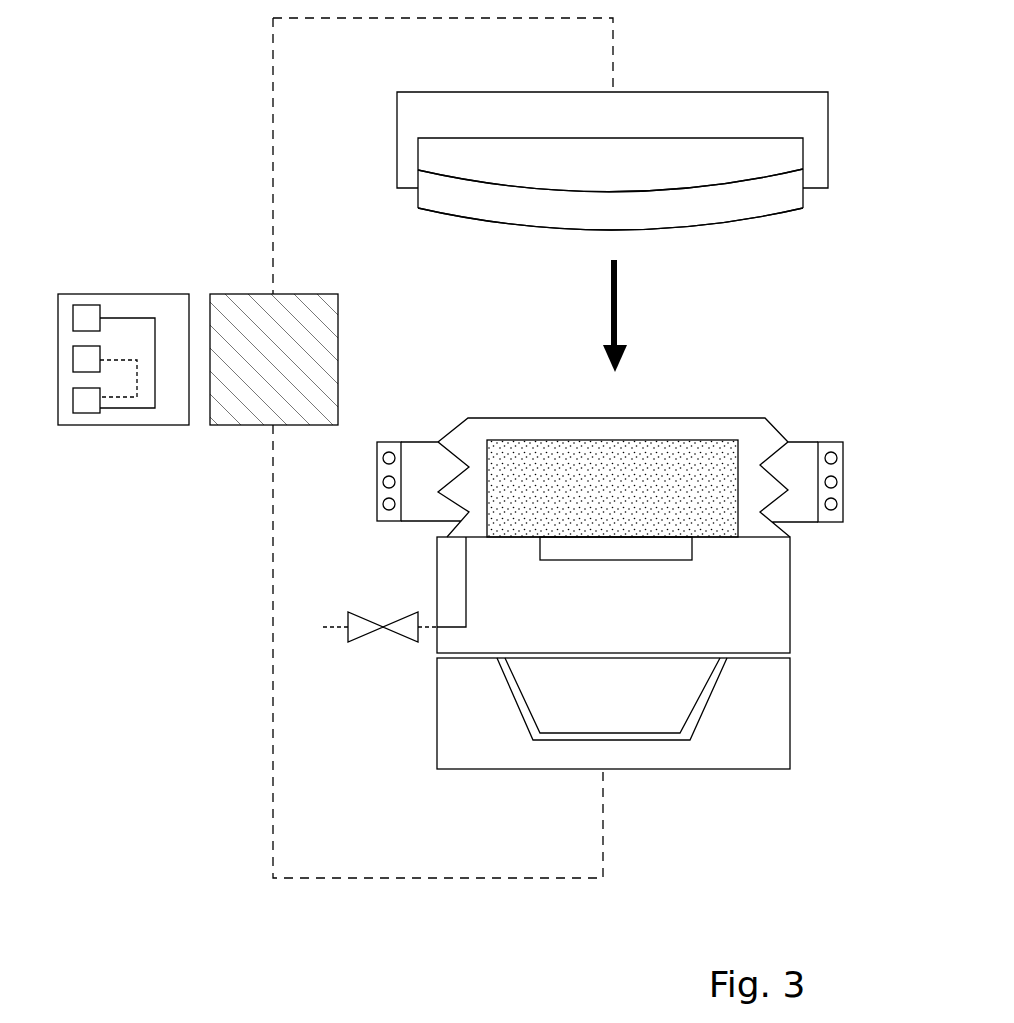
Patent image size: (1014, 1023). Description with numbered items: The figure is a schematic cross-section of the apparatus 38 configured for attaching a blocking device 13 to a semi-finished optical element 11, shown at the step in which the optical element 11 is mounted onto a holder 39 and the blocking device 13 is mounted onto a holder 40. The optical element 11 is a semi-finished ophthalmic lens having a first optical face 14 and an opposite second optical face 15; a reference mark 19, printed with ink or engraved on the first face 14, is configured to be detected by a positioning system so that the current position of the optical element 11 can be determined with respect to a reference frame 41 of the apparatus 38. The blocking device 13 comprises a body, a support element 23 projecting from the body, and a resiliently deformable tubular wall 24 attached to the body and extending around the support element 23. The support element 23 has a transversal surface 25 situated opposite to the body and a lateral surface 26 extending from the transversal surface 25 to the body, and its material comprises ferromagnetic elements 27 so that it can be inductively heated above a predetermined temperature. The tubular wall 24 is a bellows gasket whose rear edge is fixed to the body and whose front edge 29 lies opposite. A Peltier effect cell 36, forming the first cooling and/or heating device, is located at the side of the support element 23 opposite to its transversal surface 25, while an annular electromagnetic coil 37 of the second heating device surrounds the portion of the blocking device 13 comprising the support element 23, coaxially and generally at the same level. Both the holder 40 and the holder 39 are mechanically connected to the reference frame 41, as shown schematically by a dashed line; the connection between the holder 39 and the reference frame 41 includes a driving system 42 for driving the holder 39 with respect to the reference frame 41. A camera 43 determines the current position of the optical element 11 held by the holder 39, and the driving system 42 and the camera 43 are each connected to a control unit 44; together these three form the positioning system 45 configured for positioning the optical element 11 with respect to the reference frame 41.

The semi-finished optical element 11 is at (783, 212).
The blocking device 13 is at (790, 612).
The first optical face 14 is at (462, 227).
The second optical face 15 is at (507, 172).
The reference mark 19 is at (613, 222).
The support element 23 is at (738, 505).
The resiliently deformable tubular wall 24 is at (452, 462).
The transversal surface 25 is at (536, 432).
The lateral surface 26 is at (472, 490).
The ferromagnetic elements 27 is at (725, 490).
The front edge 29 is at (688, 418).
The Peltier effect cell 36 is at (622, 560).
The electromagnetic coil 37 is at (843, 492).
The apparatus 38 is at (158, 520).
The holder 39 is at (830, 115).
The holder 40 is at (790, 715).
The reference frame 41 is at (230, 294).
The driving system 42 is at (73, 360).
The camera 43 is at (82, 304).
The control unit 44 is at (87, 414).
The positioning system 45 is at (143, 294).